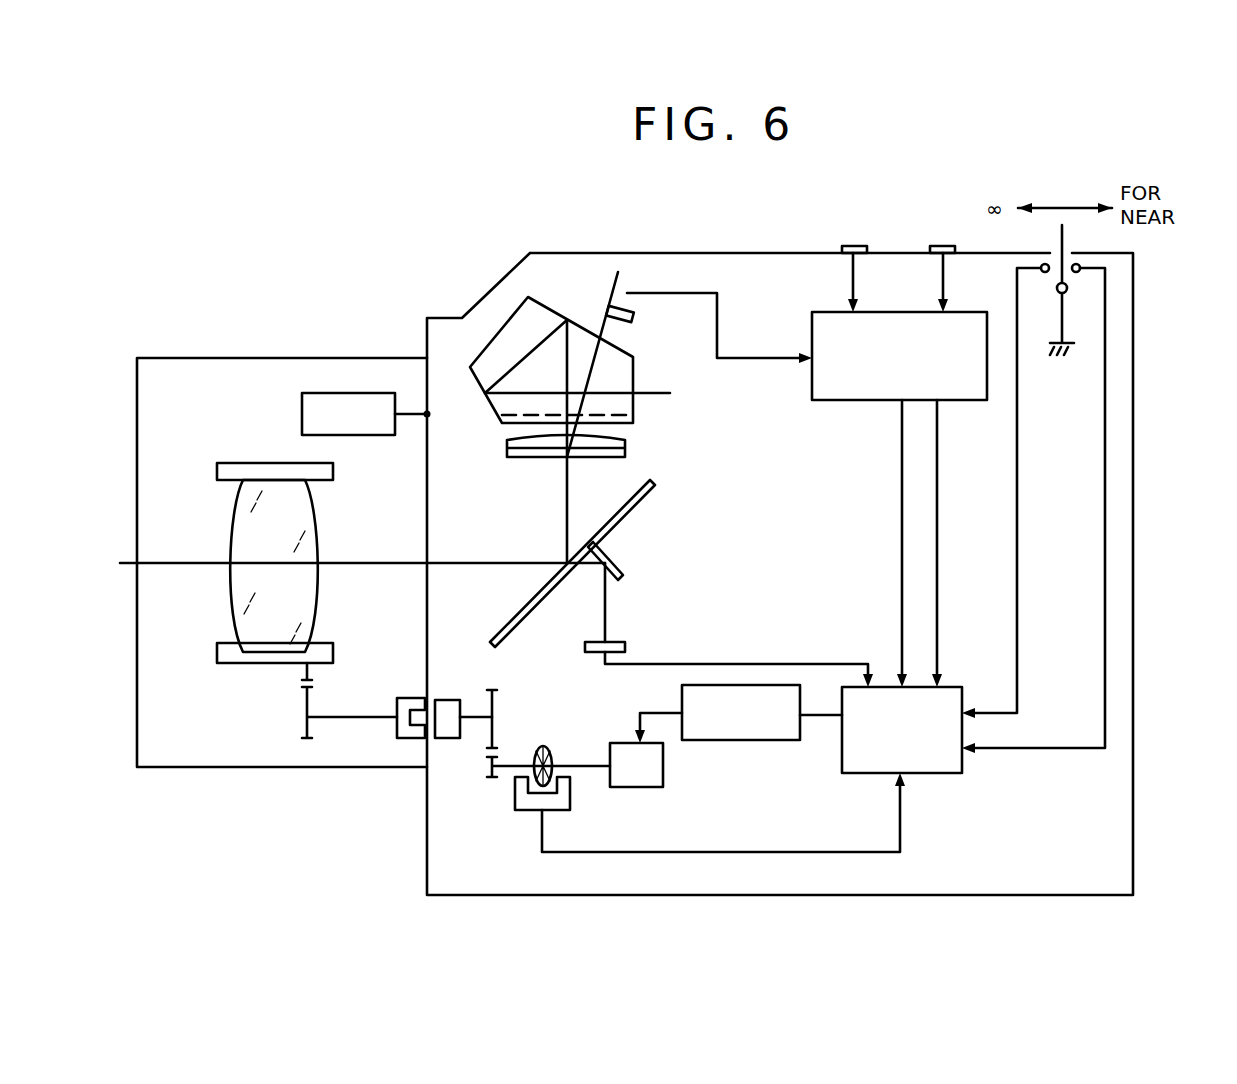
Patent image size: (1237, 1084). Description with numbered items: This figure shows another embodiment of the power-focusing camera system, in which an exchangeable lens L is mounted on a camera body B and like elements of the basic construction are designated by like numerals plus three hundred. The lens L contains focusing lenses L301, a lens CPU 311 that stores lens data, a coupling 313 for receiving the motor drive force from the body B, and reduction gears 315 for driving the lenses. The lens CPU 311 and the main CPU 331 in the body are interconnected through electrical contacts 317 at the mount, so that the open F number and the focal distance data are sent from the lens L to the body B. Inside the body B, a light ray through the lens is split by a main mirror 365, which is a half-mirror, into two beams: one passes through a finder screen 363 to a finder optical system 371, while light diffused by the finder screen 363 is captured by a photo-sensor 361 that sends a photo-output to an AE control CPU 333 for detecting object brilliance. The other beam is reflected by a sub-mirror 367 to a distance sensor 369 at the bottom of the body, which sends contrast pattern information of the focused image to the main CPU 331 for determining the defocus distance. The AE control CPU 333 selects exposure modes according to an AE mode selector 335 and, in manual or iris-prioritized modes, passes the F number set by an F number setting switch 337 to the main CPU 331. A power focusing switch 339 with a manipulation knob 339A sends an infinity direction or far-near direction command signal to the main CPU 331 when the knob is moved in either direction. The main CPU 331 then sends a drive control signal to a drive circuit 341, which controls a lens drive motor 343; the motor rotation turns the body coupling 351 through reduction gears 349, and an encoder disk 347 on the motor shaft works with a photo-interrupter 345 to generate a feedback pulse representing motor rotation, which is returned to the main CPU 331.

The camera body B is at (561, 253).
The exchangeable lens L is at (186, 358).
The focusing lenses L301 is at (315, 613).
The lens CPU 311 is at (318, 393).
The coupling 313 is at (395, 717).
The reduction gears 315 is at (307, 717).
The electrical contacts 317 is at (427, 414).
The main CPU 331 is at (945, 773).
The AE control CPU 333 is at (812, 312).
The AE mode selector 335 is at (853, 246).
The F number setting switch 337 is at (943, 246).
The power focusing switch 339 is at (1076, 280).
The manipulation knob 339A is at (1063, 240).
The drive circuit 341 is at (683, 700).
The lens drive motor 343 is at (645, 787).
The photo-interrupter 345 is at (552, 810).
The encoder disk 347 is at (543, 747).
The reduction gears 349 is at (492, 768).
The coupling 351 is at (447, 738).
The photo-sensor 361 is at (618, 272).
The finder screen 363 is at (625, 457).
The main mirror 365 is at (640, 488).
The sub-mirror 367 is at (625, 556).
The distance sensor 369 is at (617, 642).
The finder optical system 371 is at (636, 360).